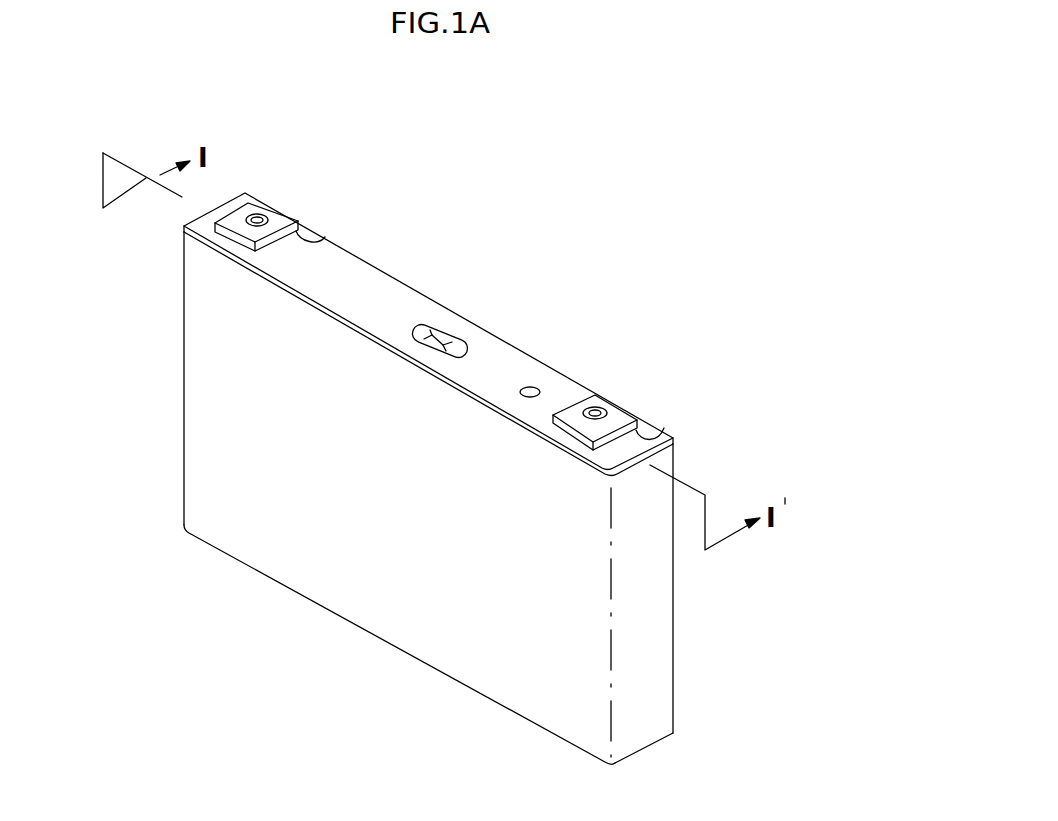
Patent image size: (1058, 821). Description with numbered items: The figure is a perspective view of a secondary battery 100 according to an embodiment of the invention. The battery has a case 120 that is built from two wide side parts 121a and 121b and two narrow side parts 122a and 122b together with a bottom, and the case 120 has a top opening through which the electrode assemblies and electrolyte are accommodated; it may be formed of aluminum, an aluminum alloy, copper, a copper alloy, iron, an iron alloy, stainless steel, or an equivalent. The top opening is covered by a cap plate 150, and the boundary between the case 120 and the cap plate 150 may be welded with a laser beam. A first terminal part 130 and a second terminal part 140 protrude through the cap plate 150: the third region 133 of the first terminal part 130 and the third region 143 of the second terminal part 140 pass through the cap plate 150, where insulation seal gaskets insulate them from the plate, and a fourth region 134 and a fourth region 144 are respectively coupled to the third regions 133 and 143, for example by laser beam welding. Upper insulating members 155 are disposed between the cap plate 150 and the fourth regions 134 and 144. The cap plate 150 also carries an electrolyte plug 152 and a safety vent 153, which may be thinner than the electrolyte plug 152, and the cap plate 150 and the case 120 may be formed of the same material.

The secondary battery 100 is at (712, 172).
The case 120 is at (279, 597).
The wide side part 121a is at (438, 642).
The wide side part 121b is at (673, 617).
The narrow side part 122a is at (655, 675).
The narrow side part 122b is at (183, 372).
The first terminal part 130 is at (672, 337).
The third region 133 is at (590, 406).
The fourth region 134 is at (620, 412).
The second terminal part 140 is at (332, 144).
The third region 143 is at (252, 215).
The fourth region 144 is at (283, 215).
The cap plate 150 is at (378, 280).
The electrolyte plug 152 is at (528, 384).
The safety vent 153 is at (442, 338).
The upper insulating member 155 is at (327, 240).